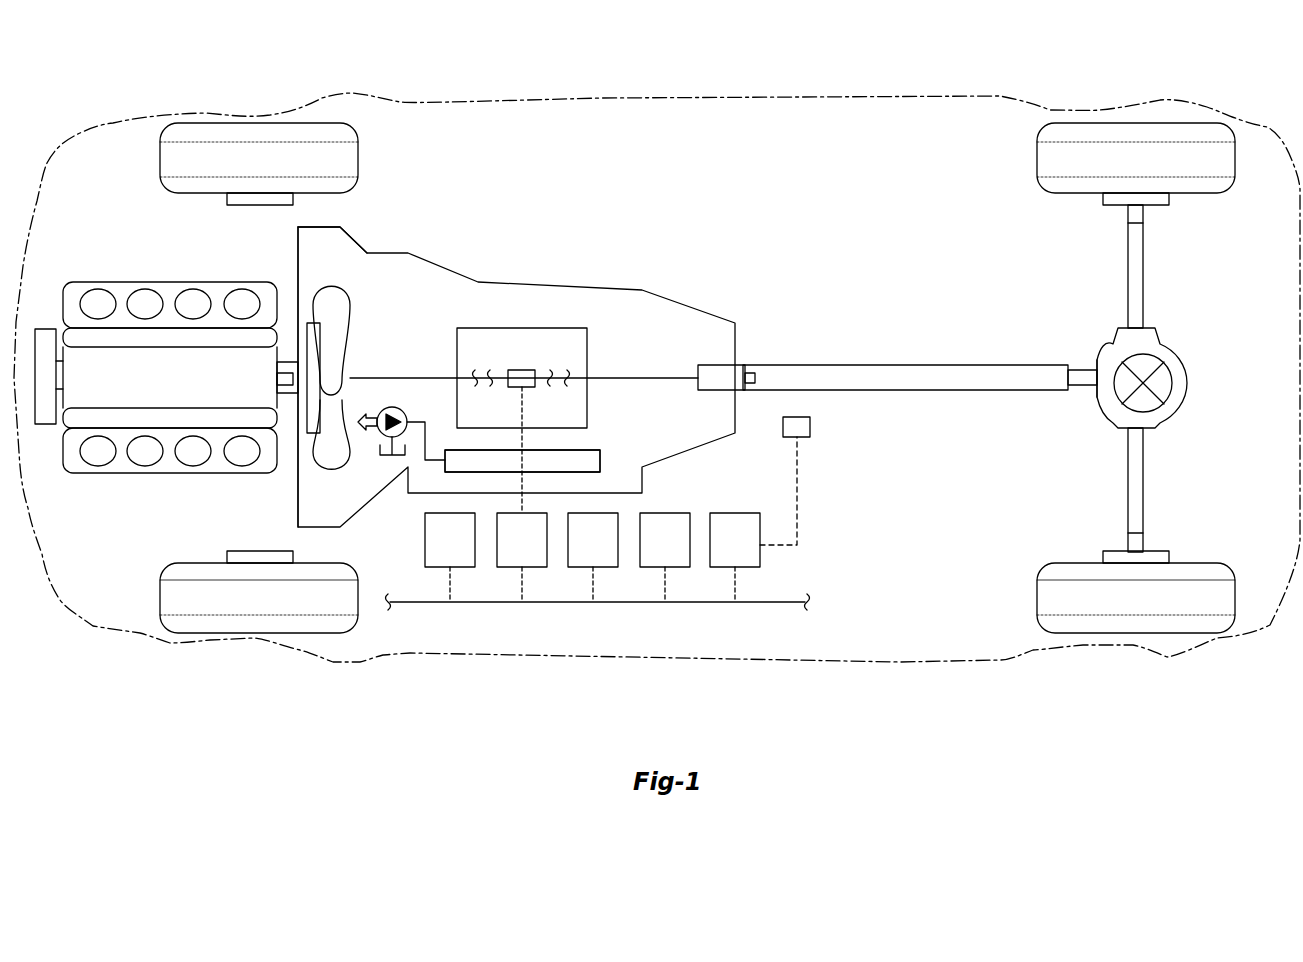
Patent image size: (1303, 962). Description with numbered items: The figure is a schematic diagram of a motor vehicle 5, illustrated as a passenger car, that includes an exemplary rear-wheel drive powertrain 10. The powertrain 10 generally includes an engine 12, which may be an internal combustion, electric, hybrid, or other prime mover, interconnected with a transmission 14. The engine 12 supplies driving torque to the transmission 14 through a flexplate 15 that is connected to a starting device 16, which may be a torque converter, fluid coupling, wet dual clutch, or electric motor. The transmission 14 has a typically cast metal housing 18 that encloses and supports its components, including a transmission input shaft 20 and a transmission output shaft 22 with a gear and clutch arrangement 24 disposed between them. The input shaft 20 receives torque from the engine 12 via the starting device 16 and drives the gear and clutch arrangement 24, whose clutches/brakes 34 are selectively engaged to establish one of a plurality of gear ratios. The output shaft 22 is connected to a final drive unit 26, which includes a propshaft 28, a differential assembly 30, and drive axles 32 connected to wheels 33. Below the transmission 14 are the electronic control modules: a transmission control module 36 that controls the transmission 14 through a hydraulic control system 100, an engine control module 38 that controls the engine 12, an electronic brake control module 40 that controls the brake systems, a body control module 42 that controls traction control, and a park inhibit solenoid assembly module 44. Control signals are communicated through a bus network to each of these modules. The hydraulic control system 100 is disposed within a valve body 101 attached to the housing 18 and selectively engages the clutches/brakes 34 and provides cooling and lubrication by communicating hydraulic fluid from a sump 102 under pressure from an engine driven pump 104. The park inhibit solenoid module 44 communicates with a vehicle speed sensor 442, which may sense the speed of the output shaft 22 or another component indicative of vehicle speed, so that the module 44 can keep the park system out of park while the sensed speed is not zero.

The motor vehicle 5 is at (778, 97).
The powertrain 10 is at (725, 200).
The engine 12 is at (111, 396).
The transmission 14 is at (543, 275).
The flexplate 15 is at (298, 290).
The starting device 16 is at (333, 292).
The housing 18 is at (702, 309).
The transmission input shaft 20 is at (377, 378).
The transmission output shaft 22 is at (632, 377).
The gear and clutch arrangement 24 is at (490, 328).
The final drive unit 26 is at (1018, 318).
The propshaft 28 is at (878, 365).
The differential assembly 30 is at (1180, 362).
The drive axles 32 is at (1137, 277).
The wheels 33 is at (1193, 195).
The clutches/brakes 34 is at (525, 370).
The transmission control module 36 is at (536, 556).
The engine control module 38 is at (464, 556).
The electronic brake control module 40 is at (607, 556).
The body control module 42 is at (679, 556).
The park inhibit solenoid assembly module 44 is at (749, 556).
The hydraulic control system 100 is at (600, 460).
The valve body 101 is at (447, 449).
The sump 102 is at (383, 457).
The engine driven pump 104 is at (393, 407).
The vehicle speed sensor 442 is at (810, 425).